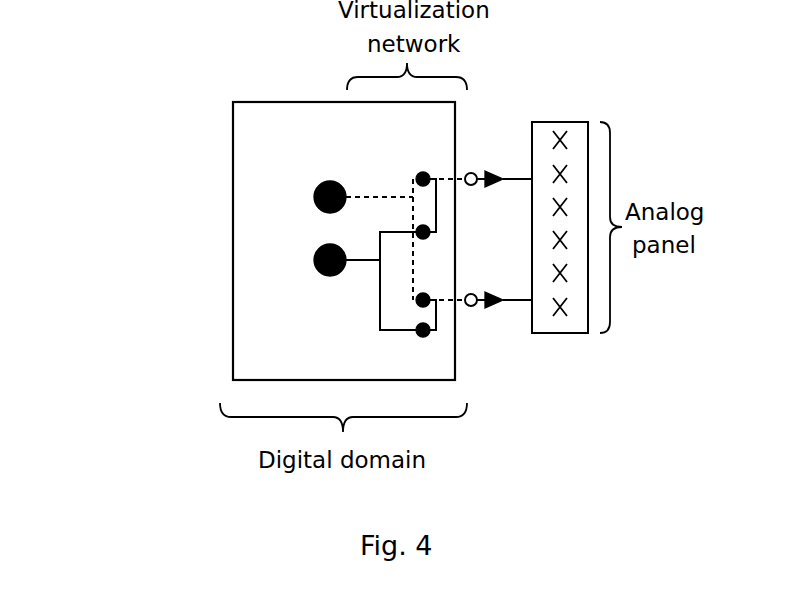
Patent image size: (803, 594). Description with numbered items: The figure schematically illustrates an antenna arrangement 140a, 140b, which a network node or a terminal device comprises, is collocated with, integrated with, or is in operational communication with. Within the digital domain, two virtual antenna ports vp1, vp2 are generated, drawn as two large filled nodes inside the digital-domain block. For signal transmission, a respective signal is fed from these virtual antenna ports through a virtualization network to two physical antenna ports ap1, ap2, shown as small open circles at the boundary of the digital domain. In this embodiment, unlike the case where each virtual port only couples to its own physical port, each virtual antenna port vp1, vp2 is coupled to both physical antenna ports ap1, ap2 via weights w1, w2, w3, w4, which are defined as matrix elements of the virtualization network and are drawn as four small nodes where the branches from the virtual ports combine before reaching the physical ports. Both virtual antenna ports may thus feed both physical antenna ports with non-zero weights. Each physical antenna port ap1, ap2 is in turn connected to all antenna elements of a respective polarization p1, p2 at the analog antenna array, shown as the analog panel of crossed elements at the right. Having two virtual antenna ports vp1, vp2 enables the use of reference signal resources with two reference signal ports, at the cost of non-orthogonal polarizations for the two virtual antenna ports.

The antenna arrangement 140a is at (171, 101).
The antenna arrangement 140b is at (259, 200).
The virtual antenna port vp1 is at (330, 181).
The virtual antenna port vp2 is at (326, 276).
The weight w1 is at (427, 166).
The weight w2 is at (431, 248).
The weight w3 is at (431, 288).
The weight w4 is at (431, 345).
The physical antenna port ap1 is at (471, 173).
The physical antenna port ap2 is at (471, 306).
The polarization p1 is at (633, 125).
The polarization p2 is at (633, 150).